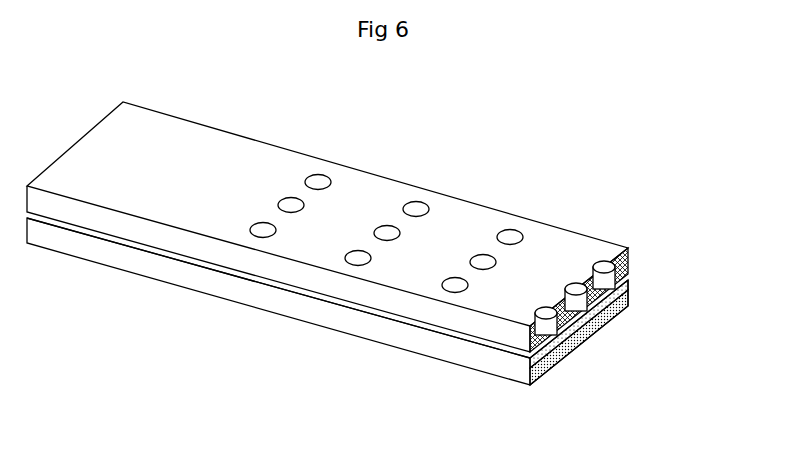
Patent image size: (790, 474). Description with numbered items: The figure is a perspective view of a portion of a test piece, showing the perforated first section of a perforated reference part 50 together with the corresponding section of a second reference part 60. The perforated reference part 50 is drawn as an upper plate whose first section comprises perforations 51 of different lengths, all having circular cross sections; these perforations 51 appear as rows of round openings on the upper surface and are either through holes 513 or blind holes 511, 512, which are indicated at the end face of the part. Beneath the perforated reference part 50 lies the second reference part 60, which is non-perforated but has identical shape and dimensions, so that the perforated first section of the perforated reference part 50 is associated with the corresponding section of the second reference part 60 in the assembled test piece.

The perforated reference part 50 is at (510, 167).
The perforations 51 is at (313, 176).
The blind hole 511 is at (620, 285).
The blind hole 512 is at (593, 308).
The through hole 513 is at (560, 355).
The second reference part 60 is at (173, 315).